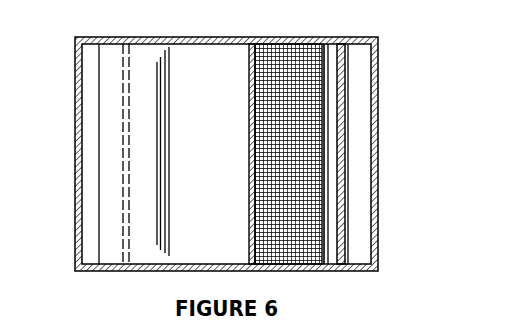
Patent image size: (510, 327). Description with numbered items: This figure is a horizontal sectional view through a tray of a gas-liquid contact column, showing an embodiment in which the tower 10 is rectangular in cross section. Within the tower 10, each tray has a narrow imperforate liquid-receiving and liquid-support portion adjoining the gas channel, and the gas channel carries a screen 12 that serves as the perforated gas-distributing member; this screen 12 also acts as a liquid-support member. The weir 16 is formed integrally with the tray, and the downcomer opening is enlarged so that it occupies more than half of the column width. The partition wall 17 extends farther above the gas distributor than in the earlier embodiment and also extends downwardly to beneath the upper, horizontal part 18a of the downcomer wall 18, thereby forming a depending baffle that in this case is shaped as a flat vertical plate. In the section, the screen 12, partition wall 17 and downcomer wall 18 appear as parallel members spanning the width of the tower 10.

The tower 10 is at (315, 40).
The screen 12 is at (253, 76).
The weir 16 is at (322, 51).
The partition wall 17 is at (253, 114).
The downcomer wall 18 is at (108, 88).
The upper, horizontal part of the downcomer wall 18a is at (200, 62).